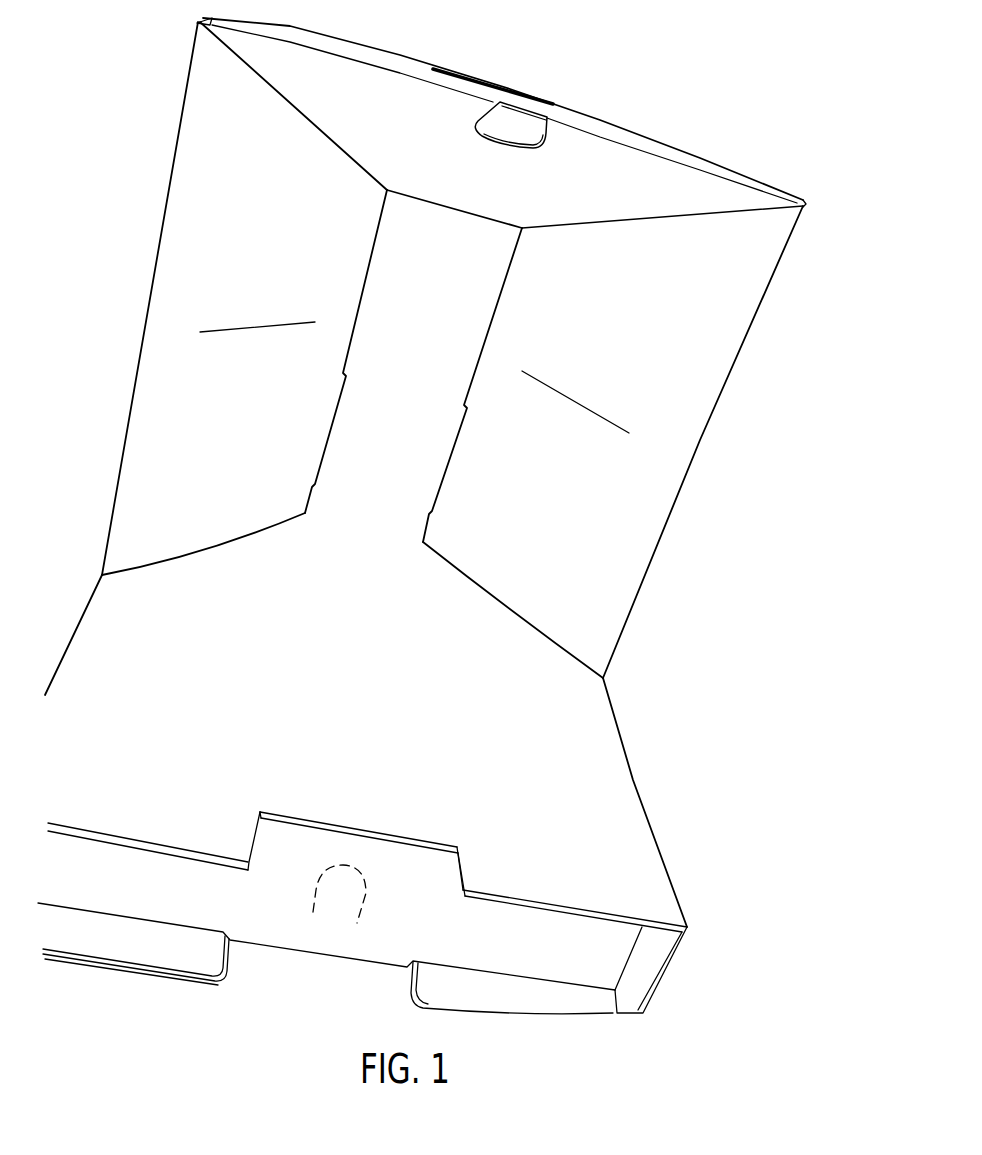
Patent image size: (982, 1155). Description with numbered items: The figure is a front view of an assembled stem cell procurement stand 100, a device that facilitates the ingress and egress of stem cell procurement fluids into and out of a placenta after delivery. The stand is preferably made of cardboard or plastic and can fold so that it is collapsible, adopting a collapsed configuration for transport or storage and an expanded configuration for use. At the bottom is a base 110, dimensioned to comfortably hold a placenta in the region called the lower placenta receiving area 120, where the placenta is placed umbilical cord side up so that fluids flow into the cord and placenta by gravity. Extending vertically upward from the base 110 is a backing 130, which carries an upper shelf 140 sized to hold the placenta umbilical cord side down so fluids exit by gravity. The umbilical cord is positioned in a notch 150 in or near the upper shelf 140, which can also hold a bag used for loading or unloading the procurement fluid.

The stem cell procurement stand 100 is at (736, 83).
The base 110 is at (185, 910).
The lower placenta receiving area 120 is at (372, 662).
The backing 130 is at (240, 298).
The upper shelf 140 is at (434, 78).
The notch 150 is at (523, 100).